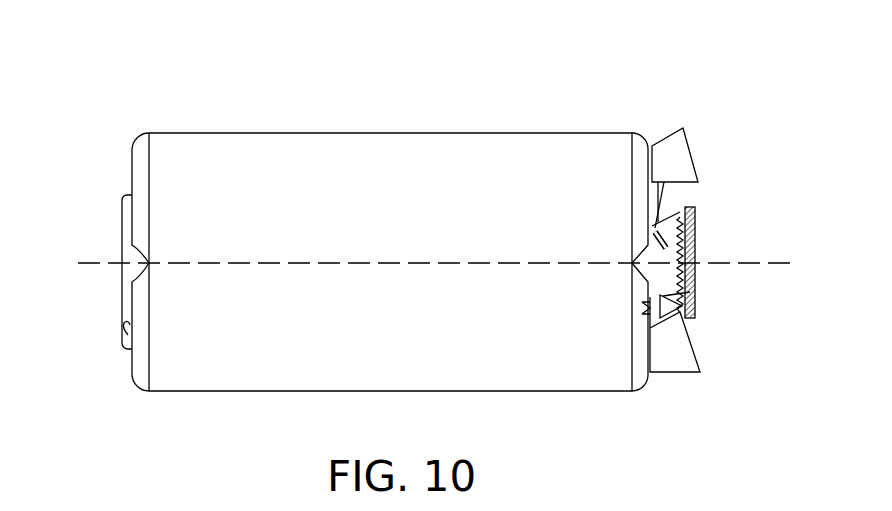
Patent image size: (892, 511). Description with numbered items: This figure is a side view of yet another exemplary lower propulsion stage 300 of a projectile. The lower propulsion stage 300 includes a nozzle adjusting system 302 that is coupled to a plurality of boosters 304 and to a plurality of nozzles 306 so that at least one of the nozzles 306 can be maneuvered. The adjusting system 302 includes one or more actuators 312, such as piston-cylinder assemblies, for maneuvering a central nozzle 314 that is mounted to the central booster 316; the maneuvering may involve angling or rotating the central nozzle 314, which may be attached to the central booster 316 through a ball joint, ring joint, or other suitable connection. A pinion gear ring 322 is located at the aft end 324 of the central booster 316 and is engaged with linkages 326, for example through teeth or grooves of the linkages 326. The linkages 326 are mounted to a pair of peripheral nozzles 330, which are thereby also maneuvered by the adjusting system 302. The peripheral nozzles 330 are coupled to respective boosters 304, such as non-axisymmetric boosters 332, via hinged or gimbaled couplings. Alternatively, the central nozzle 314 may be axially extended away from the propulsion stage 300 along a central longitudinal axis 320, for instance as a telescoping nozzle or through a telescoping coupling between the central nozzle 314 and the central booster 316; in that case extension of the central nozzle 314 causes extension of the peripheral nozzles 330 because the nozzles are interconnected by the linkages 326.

The lower propulsion stage 300 is at (441, 238).
The nozzle adjusting system 302 is at (676, 199).
The boosters 304 is at (118, 362).
The nozzles 306 is at (703, 143).
The actuators 312 is at (655, 228).
The central nozzle 314 is at (663, 279).
The central booster 316 is at (128, 335).
The central longitudinal axis 320 is at (776, 265).
The pinion gear ring 322 is at (690, 292).
The aft end 324 is at (707, 311).
The linkages 326 is at (660, 312).
The peripheral nozzles 330 is at (675, 365).
The non-axisymmetric boosters 332 is at (180, 150).